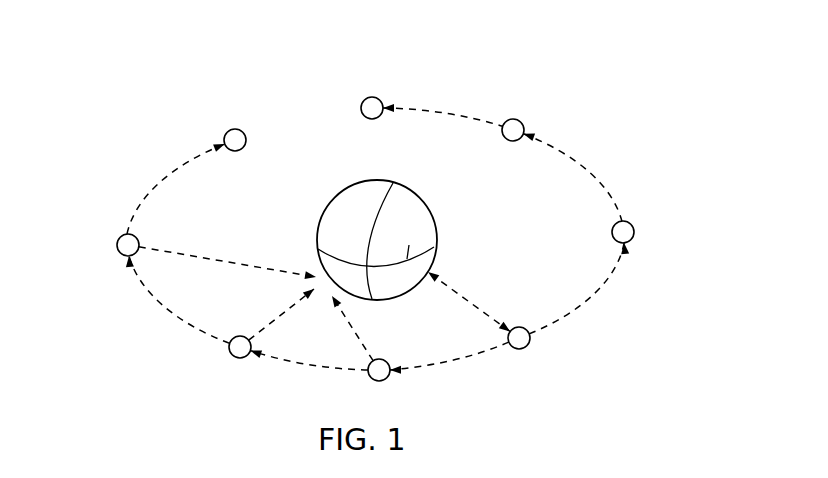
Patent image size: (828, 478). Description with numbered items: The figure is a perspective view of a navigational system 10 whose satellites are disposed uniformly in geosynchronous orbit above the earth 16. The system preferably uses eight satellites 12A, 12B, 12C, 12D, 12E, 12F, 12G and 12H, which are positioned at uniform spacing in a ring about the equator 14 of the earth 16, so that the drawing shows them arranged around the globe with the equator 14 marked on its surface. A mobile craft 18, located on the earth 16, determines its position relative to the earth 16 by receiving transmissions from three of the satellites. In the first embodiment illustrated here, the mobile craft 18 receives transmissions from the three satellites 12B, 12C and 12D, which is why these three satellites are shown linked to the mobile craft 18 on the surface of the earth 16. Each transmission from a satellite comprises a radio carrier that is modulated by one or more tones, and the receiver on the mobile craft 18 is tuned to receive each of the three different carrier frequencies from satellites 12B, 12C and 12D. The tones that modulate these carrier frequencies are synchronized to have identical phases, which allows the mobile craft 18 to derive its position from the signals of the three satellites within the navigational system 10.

The navigational system 10 is at (607, 155).
The satellite 12A is at (527, 348).
The satellite 12B is at (372, 380).
The satellite 12C is at (229, 348).
The satellite 12D is at (118, 249).
The satellite 12E is at (244, 131).
The satellite 12F is at (396, 83).
The satellite 12G is at (521, 121).
The satellite 12H is at (631, 224).
The equator 14 is at (409, 245).
The earth 16 is at (399, 187).
The mobile craft 18 is at (323, 280).